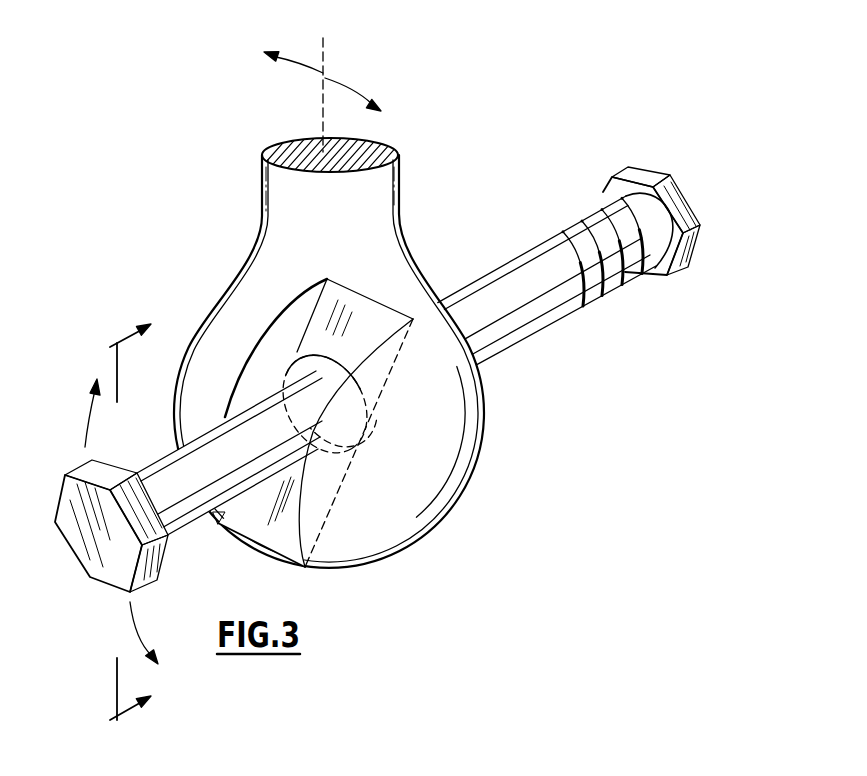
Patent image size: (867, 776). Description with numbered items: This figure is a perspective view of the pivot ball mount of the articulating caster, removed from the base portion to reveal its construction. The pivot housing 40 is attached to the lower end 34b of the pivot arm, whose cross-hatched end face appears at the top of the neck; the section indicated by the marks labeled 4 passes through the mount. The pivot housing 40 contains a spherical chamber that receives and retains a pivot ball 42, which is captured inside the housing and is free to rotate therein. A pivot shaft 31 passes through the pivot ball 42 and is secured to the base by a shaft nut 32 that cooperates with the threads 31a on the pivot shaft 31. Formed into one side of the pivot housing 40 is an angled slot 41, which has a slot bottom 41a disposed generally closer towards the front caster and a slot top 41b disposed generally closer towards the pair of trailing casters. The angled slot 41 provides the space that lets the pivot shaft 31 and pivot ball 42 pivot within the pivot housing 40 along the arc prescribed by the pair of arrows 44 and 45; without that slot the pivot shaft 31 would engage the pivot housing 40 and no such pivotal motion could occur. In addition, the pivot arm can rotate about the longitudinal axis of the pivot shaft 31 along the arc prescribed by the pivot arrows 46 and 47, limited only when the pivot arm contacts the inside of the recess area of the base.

The section line 4- 4 is at (120, 531).
The pivot shaft 31 is at (527, 247).
The threads 31a is at (613, 282).
The shaft nut 32 is at (694, 250).
The lower end 34b is at (262, 155).
The pivot housing 40 is at (463, 495).
The angled slot 41 is at (287, 565).
The slot bottom 41a is at (302, 569).
The slot top 41b is at (362, 297).
The pivot ball 42 is at (298, 358).
The arrow 44 is at (83, 423).
The arrow 45 is at (133, 637).
The pivot arrow 46 is at (297, 63).
The pivot arrow 47 is at (350, 82).